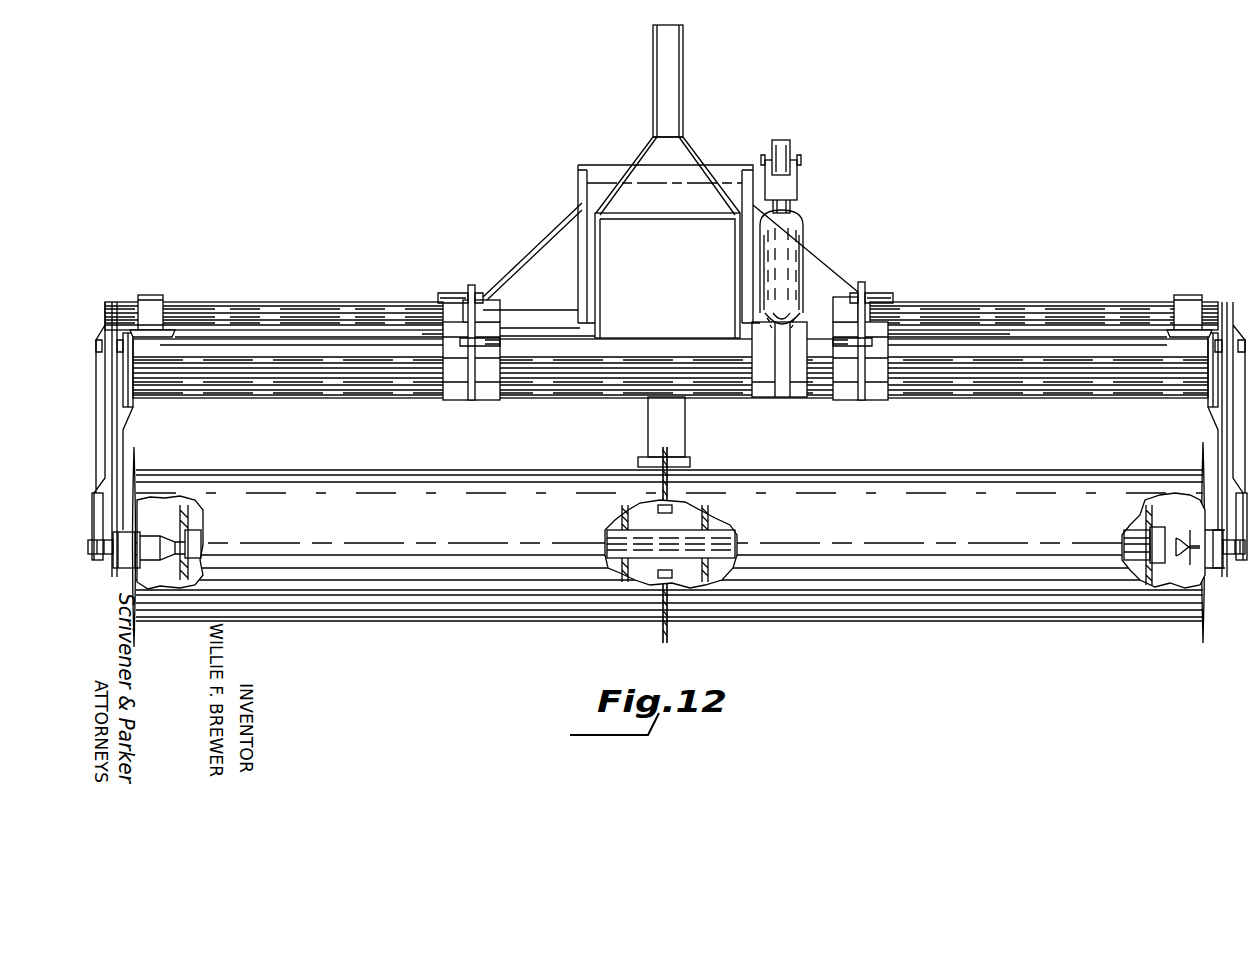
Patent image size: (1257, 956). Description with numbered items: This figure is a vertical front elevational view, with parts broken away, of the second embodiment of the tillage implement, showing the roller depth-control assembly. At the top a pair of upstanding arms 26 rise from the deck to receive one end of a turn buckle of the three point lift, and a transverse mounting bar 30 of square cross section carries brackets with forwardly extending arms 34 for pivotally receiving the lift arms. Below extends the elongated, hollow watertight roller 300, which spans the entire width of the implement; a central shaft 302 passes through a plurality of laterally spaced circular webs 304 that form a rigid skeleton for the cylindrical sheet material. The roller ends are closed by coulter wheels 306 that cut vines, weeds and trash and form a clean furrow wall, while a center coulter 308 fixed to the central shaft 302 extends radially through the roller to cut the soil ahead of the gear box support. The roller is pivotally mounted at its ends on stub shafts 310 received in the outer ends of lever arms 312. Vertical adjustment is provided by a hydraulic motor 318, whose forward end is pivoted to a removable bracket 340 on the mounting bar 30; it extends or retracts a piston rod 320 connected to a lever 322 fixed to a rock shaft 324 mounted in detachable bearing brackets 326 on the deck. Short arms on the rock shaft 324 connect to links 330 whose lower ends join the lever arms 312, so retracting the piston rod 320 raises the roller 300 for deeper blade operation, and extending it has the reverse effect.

The upstanding arms 26 is at (683, 93).
The mounting bar 30 is at (1005, 372).
The forwardly extending arms 34 is at (490, 320).
The roller 300 is at (1030, 458).
The central shaft 302 is at (1138, 538).
The circular webs 304 is at (704, 520).
The coulter wheels 306 is at (138, 460).
The center coulter 308 is at (667, 627).
The stub shafts 310 is at (1226, 566).
The lever arms 312 is at (105, 550).
The hydraulic motor 318 is at (797, 260).
The piston rod 320 is at (792, 205).
The lever 322 is at (797, 190).
The rock shaft 324 is at (285, 308).
The bearing brackets 326 is at (150, 297).
The links 330 is at (95, 370).
The removable bracket 340 is at (782, 372).